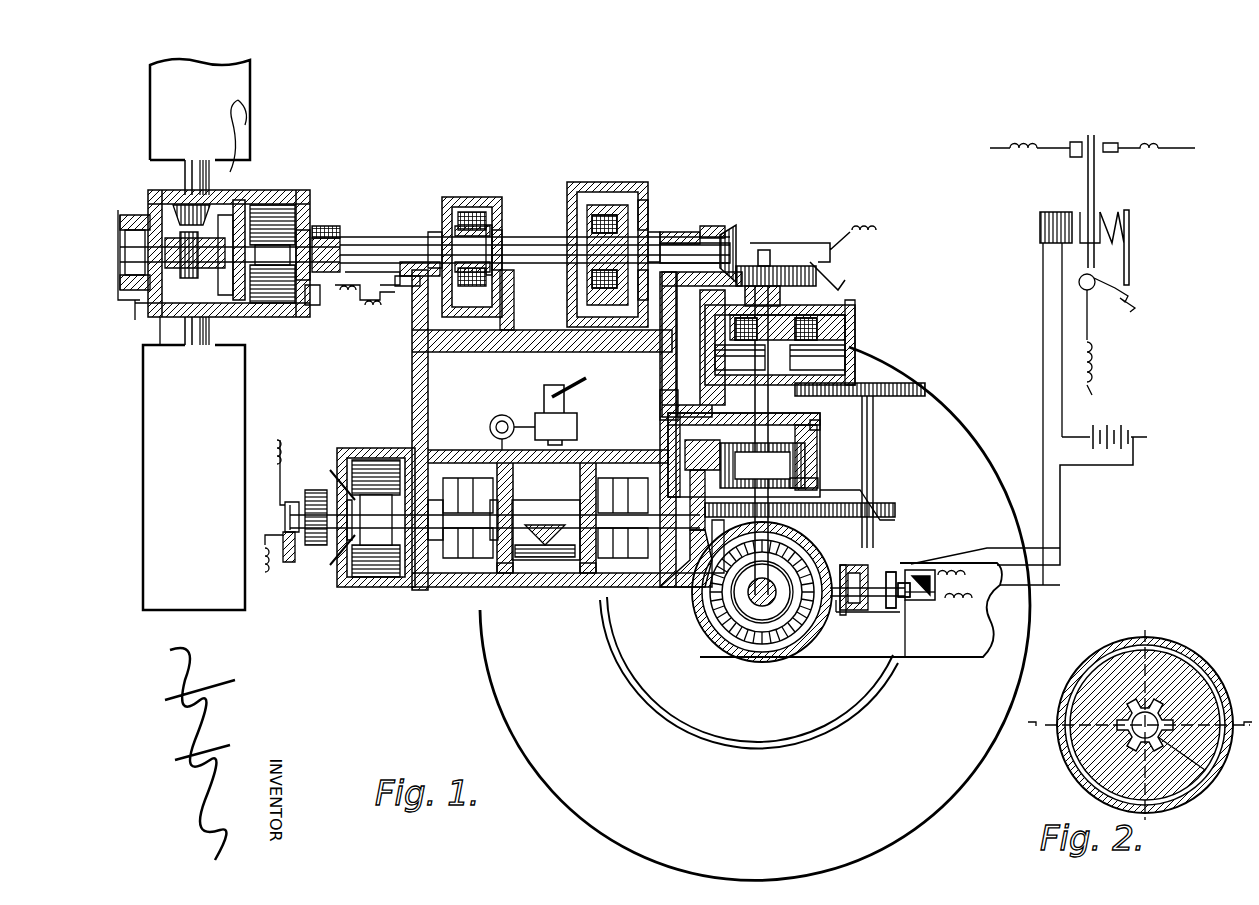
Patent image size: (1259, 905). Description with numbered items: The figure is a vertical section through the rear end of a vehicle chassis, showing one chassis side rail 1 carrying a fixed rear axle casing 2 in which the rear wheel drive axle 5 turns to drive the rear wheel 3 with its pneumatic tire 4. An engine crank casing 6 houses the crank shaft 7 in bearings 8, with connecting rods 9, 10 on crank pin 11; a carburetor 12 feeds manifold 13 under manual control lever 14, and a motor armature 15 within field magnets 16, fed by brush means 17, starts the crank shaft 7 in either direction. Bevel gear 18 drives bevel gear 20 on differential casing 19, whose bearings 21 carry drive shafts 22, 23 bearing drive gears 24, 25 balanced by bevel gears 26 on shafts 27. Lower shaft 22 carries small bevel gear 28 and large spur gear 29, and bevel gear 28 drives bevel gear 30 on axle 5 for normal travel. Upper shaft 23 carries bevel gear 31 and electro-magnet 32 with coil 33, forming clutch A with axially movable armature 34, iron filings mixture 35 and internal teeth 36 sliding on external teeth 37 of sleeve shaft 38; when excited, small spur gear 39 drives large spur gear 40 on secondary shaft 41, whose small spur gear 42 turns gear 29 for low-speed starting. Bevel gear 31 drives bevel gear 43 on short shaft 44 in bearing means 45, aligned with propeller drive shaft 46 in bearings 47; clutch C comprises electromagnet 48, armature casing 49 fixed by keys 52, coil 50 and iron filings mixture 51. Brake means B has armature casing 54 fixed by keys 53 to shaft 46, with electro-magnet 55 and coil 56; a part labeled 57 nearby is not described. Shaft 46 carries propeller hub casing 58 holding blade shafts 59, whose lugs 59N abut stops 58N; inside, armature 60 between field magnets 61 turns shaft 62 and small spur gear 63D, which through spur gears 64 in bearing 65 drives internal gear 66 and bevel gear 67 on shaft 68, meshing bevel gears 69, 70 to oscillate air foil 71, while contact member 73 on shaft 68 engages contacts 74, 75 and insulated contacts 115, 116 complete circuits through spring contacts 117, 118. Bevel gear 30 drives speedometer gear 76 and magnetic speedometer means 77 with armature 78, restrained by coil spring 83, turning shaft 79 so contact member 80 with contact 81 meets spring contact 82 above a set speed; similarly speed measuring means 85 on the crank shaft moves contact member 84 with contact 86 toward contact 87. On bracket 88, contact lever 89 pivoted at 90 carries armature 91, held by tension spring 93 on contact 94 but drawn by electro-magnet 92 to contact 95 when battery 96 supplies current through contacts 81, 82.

In FIG. 1, the chassis side rail 1 is at (958, 658).
In FIG. 1, the rear axle casing 2 is at (870, 345).
In FIG. 1, the rear wheel 3 is at (780, 742).
In FIG. 1, the pneumatic tire 4 is at (493, 648).
In FIG. 1, the rear wheel drive axle 5 is at (756, 608).
In FIG. 1, the engine crank casing 6 is at (505, 587).
In FIG. 1, the crank shaft 7 is at (448, 540).
In FIG. 1, the bearings 8 is at (492, 545).
In FIG. 1, the connecting rod 9 is at (540, 525).
In FIG. 1, the connecting rod 10 is at (548, 587).
In FIG. 1, the crank pin 11 is at (616, 545).
In FIG. 1, the carburetor 12 is at (536, 412).
In FIG. 1, the manifold 13 is at (489, 425).
In FIG. 1, the manual control lever 14 is at (566, 386).
In FIG. 1, the motor armature 15 is at (376, 518).
In FIG. 1, the field magnets 16 is at (378, 578).
In FIG. 1, the brush means 17 is at (345, 540).
In FIG. 1, the bevel gear 18 is at (690, 580).
In FIG. 1, the differential casing 19 is at (708, 438).
In FIG. 1, the bevel gear 20 is at (818, 462).
In FIG. 1, the bearings 21 is at (790, 428).
In FIG. 1, the lower differential drive shaft 22 is at (738, 520).
In FIG. 1, the upper differential drive shaft 23 is at (662, 405).
In FIG. 2, the upper differential drive shaft 23 is at (1125, 720).
In FIG. 1, the differential drive gear 24 is at (800, 488).
In FIG. 1, the differential drive gear 25 is at (762, 465).
In FIG. 1, the balancing bevel gears 26 is at (710, 455).
In FIG. 1, the shafts 27 is at (662, 432).
In FIG. 1, the small bevel gear 28 is at (840, 548).
In FIG. 1, the large spur gear 29 is at (850, 490).
In FIG. 1, the larger bevel gear 30 is at (735, 620).
In FIG. 1, the bevel gear 31 is at (762, 215).
In FIG. 1, the electro-magnet 32 is at (820, 315).
In FIG. 1, the electro-magnetic coil 33 is at (848, 318).
In FIG. 1, the axially movable armature 34 is at (858, 345).
In FIG. 2, the axially movable armature 34 is at (1110, 660).
In FIG. 1, the iron filings mixture 35 is at (712, 355).
In FIG. 2, the iron filings mixture 35 is at (1172, 645).
In FIG. 2, the internal gear teeth 36 is at (1160, 720).
In FIG. 2, the external gear teeth 37 is at (1205, 770).
In FIG. 1, the sleeve shaft 38 is at (806, 318).
In FIG. 2, the sleeve shaft 38 is at (1172, 718).
In FIG. 1, the small spur gear 39 is at (740, 375).
In FIG. 1, the large spur gear 40 is at (926, 388).
In FIG. 1, the secondary shaft 41 is at (875, 452).
In FIG. 1, the small spur gear 42 is at (898, 510).
In FIG. 1, the smaller bevel gear 43 is at (742, 235).
In FIG. 1, the short shaft 44 is at (725, 228).
In FIG. 1, the bearing means 45 is at (690, 232).
In FIG. 1, the propeller drive shaft 46 is at (433, 230).
In FIG. 1, the bearings 47 is at (410, 237).
In FIG. 1, the electromagnet 48 is at (645, 205).
In FIG. 1, the armature casing 49 is at (620, 215).
In FIG. 1, the coil 50 is at (645, 270).
In FIG. 1, the iron filings mixture 51 is at (595, 190).
In FIG. 1, the keys 52 is at (655, 235).
In FIG. 1, the keys 53 is at (455, 196).
In FIG. 1, the armature casing 54 is at (490, 235).
In FIG. 1, the electro-magnet 55 is at (492, 225).
In FIG. 1, the coil 56 is at (472, 210).
In FIG. 1, the support 57 is at (455, 315).
In FIG. 1, the propeller hub casing 58 is at (313, 300).
In FIG. 1, the stops 58N is at (245, 120).
In FIG. 1, the propeller blade shafts 59 is at (188, 158).
In FIG. 1, the lugs 59N is at (227, 133).
In FIG. 1, the armature 60 is at (275, 255).
In FIG. 1, the field magnets 61 is at (300, 230).
In FIG. 1, the shaft 62 is at (322, 225).
In FIG. 1, the small spur gear 63D is at (235, 215).
In FIG. 1, the small spur gears 64 is at (205, 160).
In FIG. 1, the bearing 65 is at (200, 240).
In FIG. 1, the internal gear 66 is at (197, 340).
In FIG. 1, the bevel gear 67 is at (160, 335).
In FIG. 1, the shaft 68 is at (176, 200).
In FIG. 1, the bevel gear 69 is at (228, 195).
In FIG. 1, the bevel gear 70 is at (245, 298).
In FIG. 1, the air foil 71 is at (143, 517).
In FIG. 1, the contact member 73 is at (148, 312).
In FIG. 1, the contact 74 is at (128, 292).
In FIG. 1, the contact 75 is at (126, 212).
In FIG. 1, the speedometer gear 76 is at (838, 615).
In FIG. 1, the magnetic speedometer means 77 is at (850, 612).
In FIG. 1, the speed metering armature 78 is at (252, 70).
In FIG. 1, the shaft 79 is at (935, 592).
In FIG. 1, the contact member 80 is at (912, 598).
In FIG. 1, the contact 81 is at (900, 608).
In FIG. 1, the spring contact 82 is at (982, 567).
In FIG. 1, the coil spring 83 is at (906, 658).
In FIG. 1, the contact member 84 is at (310, 490).
In FIG. 1, the electro-magnetic speed measuring means 85 is at (330, 470).
In FIG. 1, the contact 86 is at (285, 520).
In FIG. 1, the contact 87 is at (290, 565).
In FIG. 1, the bracket 88 is at (1133, 305).
In FIG. 1, the contact lever 89 is at (1096, 188).
In FIG. 1, the pivot 90 is at (1095, 305).
In FIG. 1, the armature 91 is at (1085, 212).
In FIG. 1, the electro-magnet 92 is at (1047, 212).
In FIG. 1, the tension spring 93 is at (1124, 208).
In FIG. 1, the contact 94 is at (1110, 142).
In FIG. 1, the contact 95 is at (1072, 142).
In FIG. 1, the battery 96 is at (1128, 424).
In FIG. 1, the insulated contact 115 is at (410, 262).
In FIG. 1, the insulated contact 116 is at (412, 258).
In FIG. 1, the spring contact 117 is at (382, 305).
In FIG. 1, the spring contact 118 is at (352, 300).
In FIG. 1, the clutch A is at (860, 325).
In FIG. 1, the brake means B is at (478, 196).
In FIG. 1, the clutch C is at (608, 182).